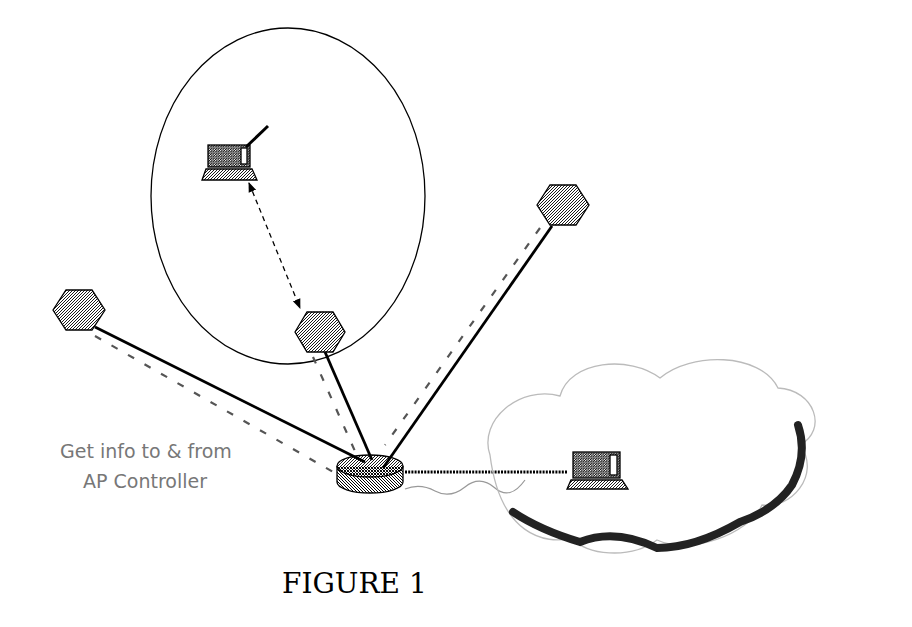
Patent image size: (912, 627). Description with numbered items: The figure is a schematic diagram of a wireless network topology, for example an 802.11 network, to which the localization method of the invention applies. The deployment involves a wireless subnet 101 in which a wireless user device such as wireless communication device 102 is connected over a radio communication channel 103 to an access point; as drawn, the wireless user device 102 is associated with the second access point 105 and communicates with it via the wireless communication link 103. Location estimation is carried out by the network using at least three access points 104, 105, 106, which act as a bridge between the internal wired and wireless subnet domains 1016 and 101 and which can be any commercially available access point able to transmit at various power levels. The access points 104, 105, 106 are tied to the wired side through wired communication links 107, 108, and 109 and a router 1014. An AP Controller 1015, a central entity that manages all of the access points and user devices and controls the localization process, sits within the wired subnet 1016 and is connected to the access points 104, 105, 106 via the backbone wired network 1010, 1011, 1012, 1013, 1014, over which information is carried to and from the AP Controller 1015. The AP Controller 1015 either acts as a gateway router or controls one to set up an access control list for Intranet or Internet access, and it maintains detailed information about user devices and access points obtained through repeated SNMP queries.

The wireless subnet 101 is at (430, 199).
The wireless communication device 102 is at (256, 158).
The radio communication channel 103 is at (271, 250).
The access point 104 is at (51, 310).
The access point 105 is at (349, 330).
The access point 106 is at (586, 192).
The wired communication link 107 is at (136, 347).
The wired communication link 108 is at (356, 410).
The wired communication link 109 is at (526, 282).
The backbone wired network link 1010 is at (436, 469).
The backbone wired network path 1011 is at (157, 384).
The backbone wired network path 1012 is at (329, 410).
The backbone wired network path 1013 is at (434, 360).
The router 1014 is at (338, 485).
The AP Controller 1015 is at (634, 490).
The wired subnet 1016 is at (800, 425).